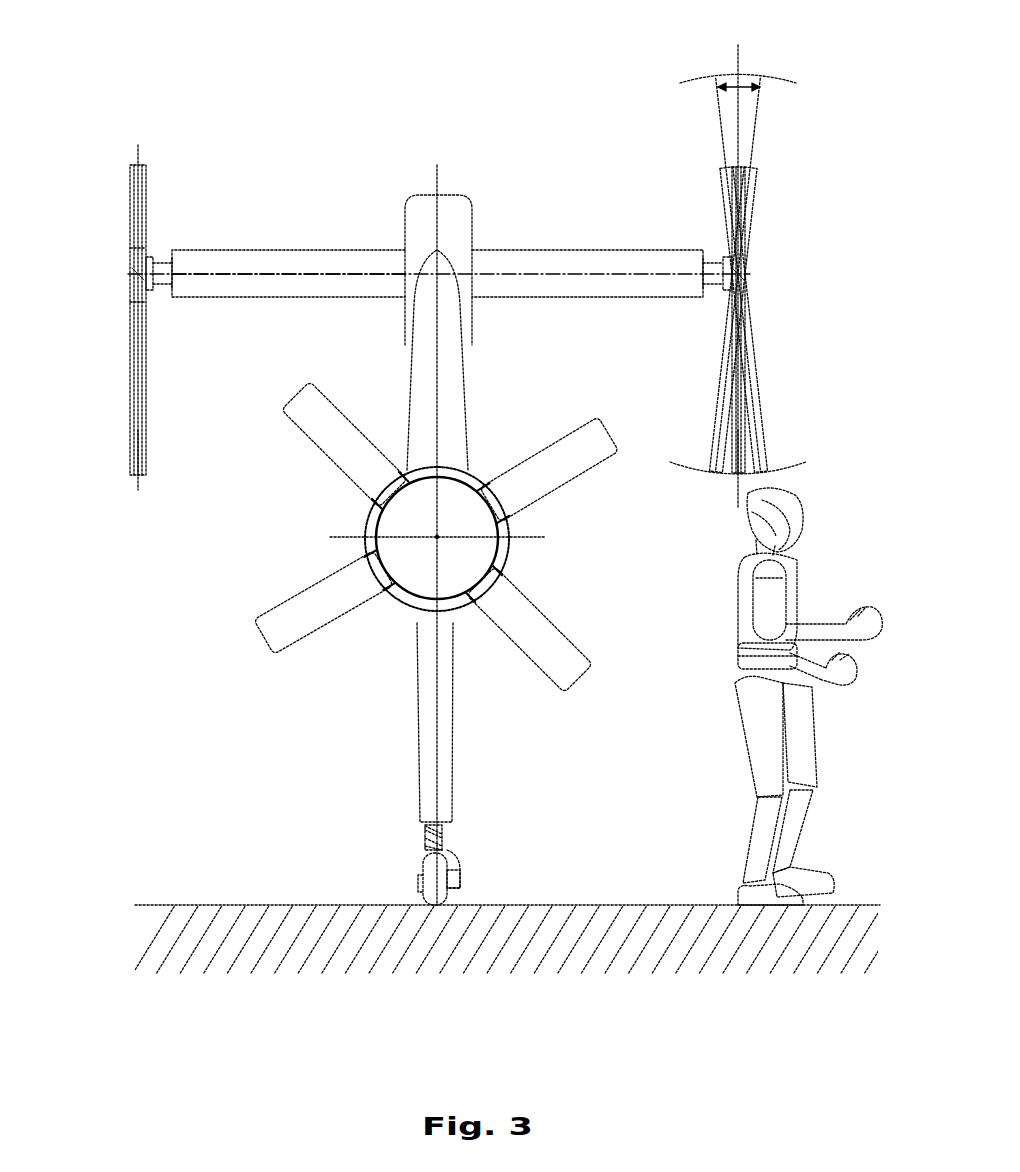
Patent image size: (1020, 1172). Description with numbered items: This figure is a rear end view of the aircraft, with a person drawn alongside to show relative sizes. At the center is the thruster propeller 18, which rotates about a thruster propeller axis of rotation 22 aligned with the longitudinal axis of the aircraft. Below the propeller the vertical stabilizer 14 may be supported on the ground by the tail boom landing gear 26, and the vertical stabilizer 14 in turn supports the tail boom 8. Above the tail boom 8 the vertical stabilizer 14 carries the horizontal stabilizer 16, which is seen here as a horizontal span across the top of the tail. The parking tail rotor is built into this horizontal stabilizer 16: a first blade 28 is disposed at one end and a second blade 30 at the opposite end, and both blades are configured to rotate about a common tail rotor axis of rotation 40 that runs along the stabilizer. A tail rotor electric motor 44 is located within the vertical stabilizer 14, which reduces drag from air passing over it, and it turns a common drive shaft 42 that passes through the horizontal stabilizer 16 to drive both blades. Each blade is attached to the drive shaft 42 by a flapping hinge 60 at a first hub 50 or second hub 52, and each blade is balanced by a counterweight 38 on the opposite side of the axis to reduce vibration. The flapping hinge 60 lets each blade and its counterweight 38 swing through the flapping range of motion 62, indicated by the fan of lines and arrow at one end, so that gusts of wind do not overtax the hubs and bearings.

The tail boom 8 is at (507, 553).
The vertical stabilizer 14 is at (413, 352).
The horizontal stabilizer 16 is at (280, 250).
The thruster propeller 18 is at (320, 455).
The thruster propeller axis of rotation 22 is at (437, 537).
The tail boom landing gear 26 is at (450, 862).
The first blade 28 is at (126, 425).
The second blade 30 is at (738, 432).
The counterweight 38 is at (136, 165).
The tail rotor axis of rotation 40 is at (232, 275).
The drive shaft 42 is at (162, 265).
The tail rotor electric motor 44 is at (453, 233).
The first hub 50 is at (131, 273).
The second hub 52 is at (748, 274).
The flapping hinge 60 is at (134, 280).
The flapping range of motion 62 is at (745, 83).